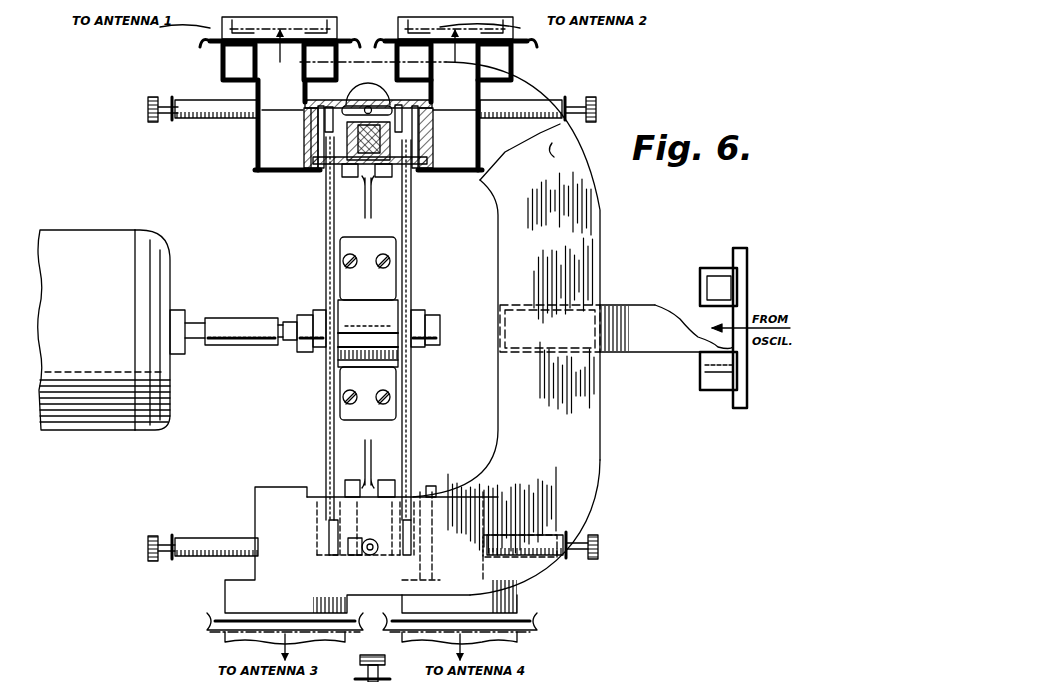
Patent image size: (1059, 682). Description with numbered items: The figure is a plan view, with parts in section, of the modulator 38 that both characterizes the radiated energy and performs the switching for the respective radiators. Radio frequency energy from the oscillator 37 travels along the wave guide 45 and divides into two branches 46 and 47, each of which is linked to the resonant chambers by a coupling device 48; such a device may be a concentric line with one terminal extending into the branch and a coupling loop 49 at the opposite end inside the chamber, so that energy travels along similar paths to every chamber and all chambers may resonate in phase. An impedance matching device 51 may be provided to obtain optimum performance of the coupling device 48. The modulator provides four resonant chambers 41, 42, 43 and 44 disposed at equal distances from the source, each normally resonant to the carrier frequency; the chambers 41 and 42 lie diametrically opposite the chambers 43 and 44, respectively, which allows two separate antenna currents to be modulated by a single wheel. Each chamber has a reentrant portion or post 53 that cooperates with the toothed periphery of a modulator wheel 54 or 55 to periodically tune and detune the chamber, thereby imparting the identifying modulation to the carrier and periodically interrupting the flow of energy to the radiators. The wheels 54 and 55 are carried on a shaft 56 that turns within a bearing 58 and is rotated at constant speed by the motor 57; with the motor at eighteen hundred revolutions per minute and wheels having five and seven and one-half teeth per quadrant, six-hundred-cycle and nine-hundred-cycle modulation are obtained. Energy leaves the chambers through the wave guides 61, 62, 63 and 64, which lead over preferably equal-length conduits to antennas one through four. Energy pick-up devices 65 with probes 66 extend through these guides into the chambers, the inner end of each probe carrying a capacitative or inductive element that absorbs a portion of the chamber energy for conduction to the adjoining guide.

The oscillator 37 is at (745, 328).
The modulator 38 is at (238, 314).
The resonant chamber 41 is at (326, 165).
The resonant chamber 42 is at (415, 162).
The resonant chamber 43 is at (325, 497).
The resonant chamber 44 is at (415, 497).
The wave guide 45 is at (634, 305).
The branch 46 is at (599, 238).
The branch 47 is at (597, 411).
The coupling device 48 is at (385, 102).
The coupling loop 49 is at (370, 129).
The impedance matching device 51 is at (374, 555).
The reentrant portion or post 53 is at (305, 152).
The modulator wheel 54 is at (325, 232).
The modulator wheel 55 is at (412, 251).
The shaft 56 is at (298, 315).
The motor 57 is at (80, 229).
The bearing 58 is at (380, 312).
The wave guide 61 is at (253, 147).
The wave guide 62 is at (476, 150).
The wave guide 63 is at (258, 505).
The wave guide 64 is at (454, 490).
The energy pick-up device 65 is at (191, 100).
The probe 66 is at (273, 108).